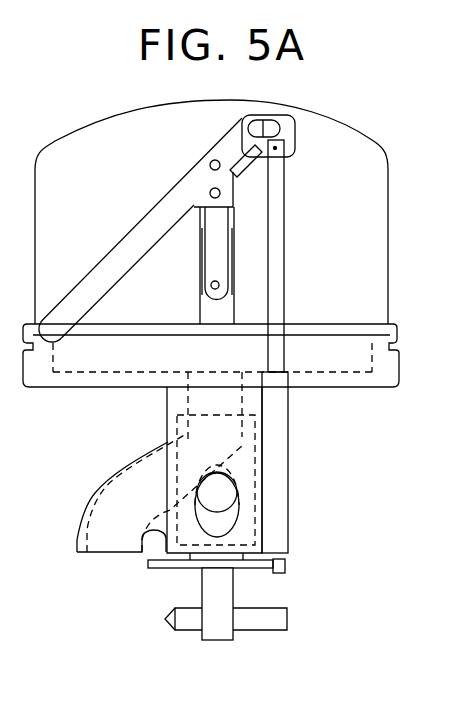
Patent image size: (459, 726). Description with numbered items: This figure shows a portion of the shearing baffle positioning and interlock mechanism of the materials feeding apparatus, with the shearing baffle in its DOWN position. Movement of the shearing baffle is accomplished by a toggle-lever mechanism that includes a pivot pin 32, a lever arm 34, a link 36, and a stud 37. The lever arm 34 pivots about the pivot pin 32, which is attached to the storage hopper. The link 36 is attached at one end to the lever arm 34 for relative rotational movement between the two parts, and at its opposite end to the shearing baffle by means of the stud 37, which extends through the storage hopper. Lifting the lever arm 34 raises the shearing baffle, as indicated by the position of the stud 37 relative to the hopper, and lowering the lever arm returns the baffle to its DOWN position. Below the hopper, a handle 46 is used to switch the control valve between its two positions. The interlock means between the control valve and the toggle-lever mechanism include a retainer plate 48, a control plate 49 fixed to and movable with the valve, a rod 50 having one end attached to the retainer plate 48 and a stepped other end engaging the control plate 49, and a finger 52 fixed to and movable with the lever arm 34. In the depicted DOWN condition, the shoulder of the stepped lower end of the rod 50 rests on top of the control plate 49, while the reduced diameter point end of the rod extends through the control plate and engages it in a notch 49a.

The pivot pin 32 is at (210, 158).
The lever arm 34 is at (126, 235).
The link 36 is at (198, 222).
The stud 37 is at (206, 294).
The handle 46 is at (260, 631).
The retainer plate 48 is at (296, 141).
The control plate 49 is at (158, 570).
The notch 49a is at (286, 566).
The rod 50 is at (285, 276).
The finger 52 is at (251, 166).